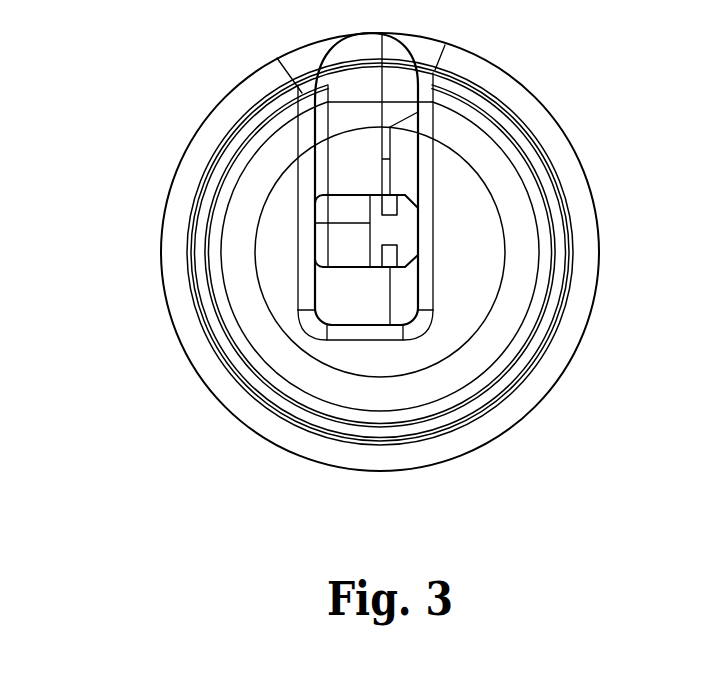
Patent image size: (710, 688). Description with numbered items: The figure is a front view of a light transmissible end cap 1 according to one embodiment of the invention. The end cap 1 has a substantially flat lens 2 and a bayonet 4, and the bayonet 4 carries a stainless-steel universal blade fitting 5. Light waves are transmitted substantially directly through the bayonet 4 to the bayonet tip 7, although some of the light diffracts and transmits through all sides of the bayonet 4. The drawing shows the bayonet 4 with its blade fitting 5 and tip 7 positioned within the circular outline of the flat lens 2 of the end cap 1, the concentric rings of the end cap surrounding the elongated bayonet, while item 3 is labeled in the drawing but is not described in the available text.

The light transmissible end cap 1 is at (245, 157).
The lens 2 is at (513, 92).
The tear panel / opening 3 is at (412, 133).
The bayonet 4 is at (400, 230).
The universal blade fitting 5 is at (340, 215).
The bayonet tip 7 is at (340, 305).